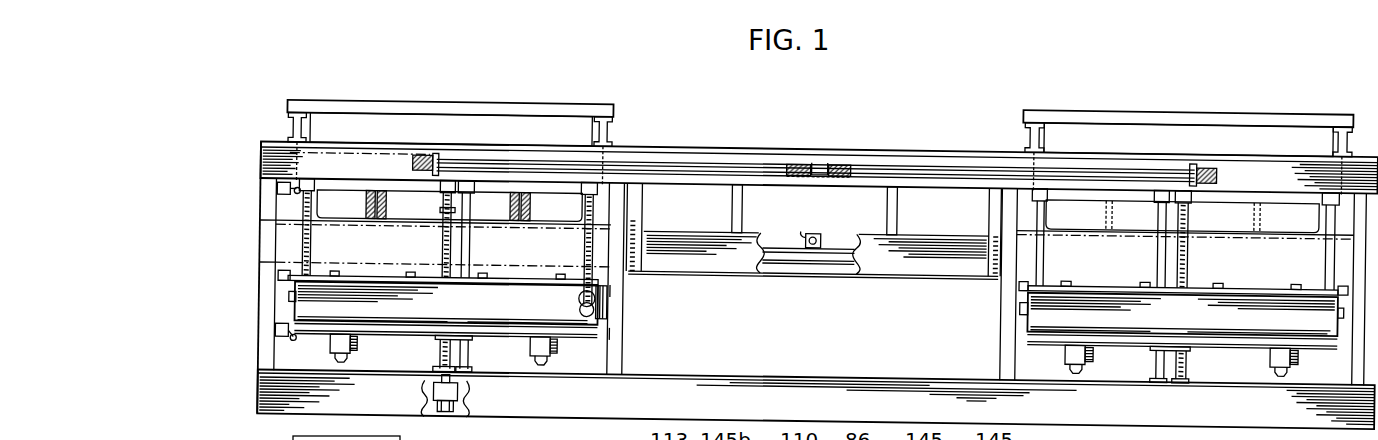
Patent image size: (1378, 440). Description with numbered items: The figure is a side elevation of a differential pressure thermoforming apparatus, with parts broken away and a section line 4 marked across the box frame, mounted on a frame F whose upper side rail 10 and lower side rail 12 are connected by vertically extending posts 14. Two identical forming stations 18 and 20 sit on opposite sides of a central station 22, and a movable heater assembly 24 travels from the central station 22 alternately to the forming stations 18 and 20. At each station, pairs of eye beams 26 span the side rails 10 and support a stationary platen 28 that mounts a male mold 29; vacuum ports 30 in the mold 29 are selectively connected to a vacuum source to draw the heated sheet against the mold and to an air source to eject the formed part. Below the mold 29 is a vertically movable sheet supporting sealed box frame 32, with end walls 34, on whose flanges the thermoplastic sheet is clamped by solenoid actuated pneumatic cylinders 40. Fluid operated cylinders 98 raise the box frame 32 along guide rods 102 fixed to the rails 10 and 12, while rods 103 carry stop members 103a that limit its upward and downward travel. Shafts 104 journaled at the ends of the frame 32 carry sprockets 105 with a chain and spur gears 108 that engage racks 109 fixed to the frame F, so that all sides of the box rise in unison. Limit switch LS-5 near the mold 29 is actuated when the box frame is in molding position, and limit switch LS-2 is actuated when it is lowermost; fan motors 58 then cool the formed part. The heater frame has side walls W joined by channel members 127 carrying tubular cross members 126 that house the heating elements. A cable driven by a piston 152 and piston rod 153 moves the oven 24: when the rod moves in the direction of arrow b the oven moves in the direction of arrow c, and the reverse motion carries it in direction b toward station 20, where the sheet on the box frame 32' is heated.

The upper side rail 10 is at (262, 152).
The lower side rail 12 is at (265, 379).
The vertically extending posts 14 is at (262, 243).
The forming station 18 is at (459, 87).
The forming station 20 is at (1215, 87).
The central station 22 is at (866, 110).
The movable heater assembly 24 is at (872, 186).
The eye beams 26 is at (290, 123).
The stationary platen 28 is at (484, 128).
The male mold 29 is at (351, 215).
The vacuum ports 30 is at (368, 188).
The sheet supporting sealed box frame 32 is at (377, 306).
The male mold box frame 32' is at (1184, 306).
The end walls 34 is at (470, 313).
The pneumatic cylinders 40 is at (490, 272).
The fan motors 58 is at (358, 340).
The fluid operated cylinders 98 is at (455, 380).
The guide rods 102 is at (472, 242).
The rods 103 is at (445, 245).
The stop members 103a is at (445, 208).
The shafts 104 is at (583, 293).
The sprocket 105 is at (608, 314).
The spur gears 108 is at (582, 304).
The racks 109 is at (310, 231).
The upper reinforcing cross members 126 is at (816, 223).
The rectangularly shaped channel members 127 is at (808, 225).
The piston 152 is at (820, 153).
The piston rod 153 is at (804, 148).
The section line 4- 4 is at (616, 285).
The frame F is at (196, 241).
The side walls W is at (897, 261).
The arrow b is at (777, 70).
The arrow c is at (775, 90).
The limit switch LS-2 is at (278, 330).
The limit switch LS-5 is at (278, 190).